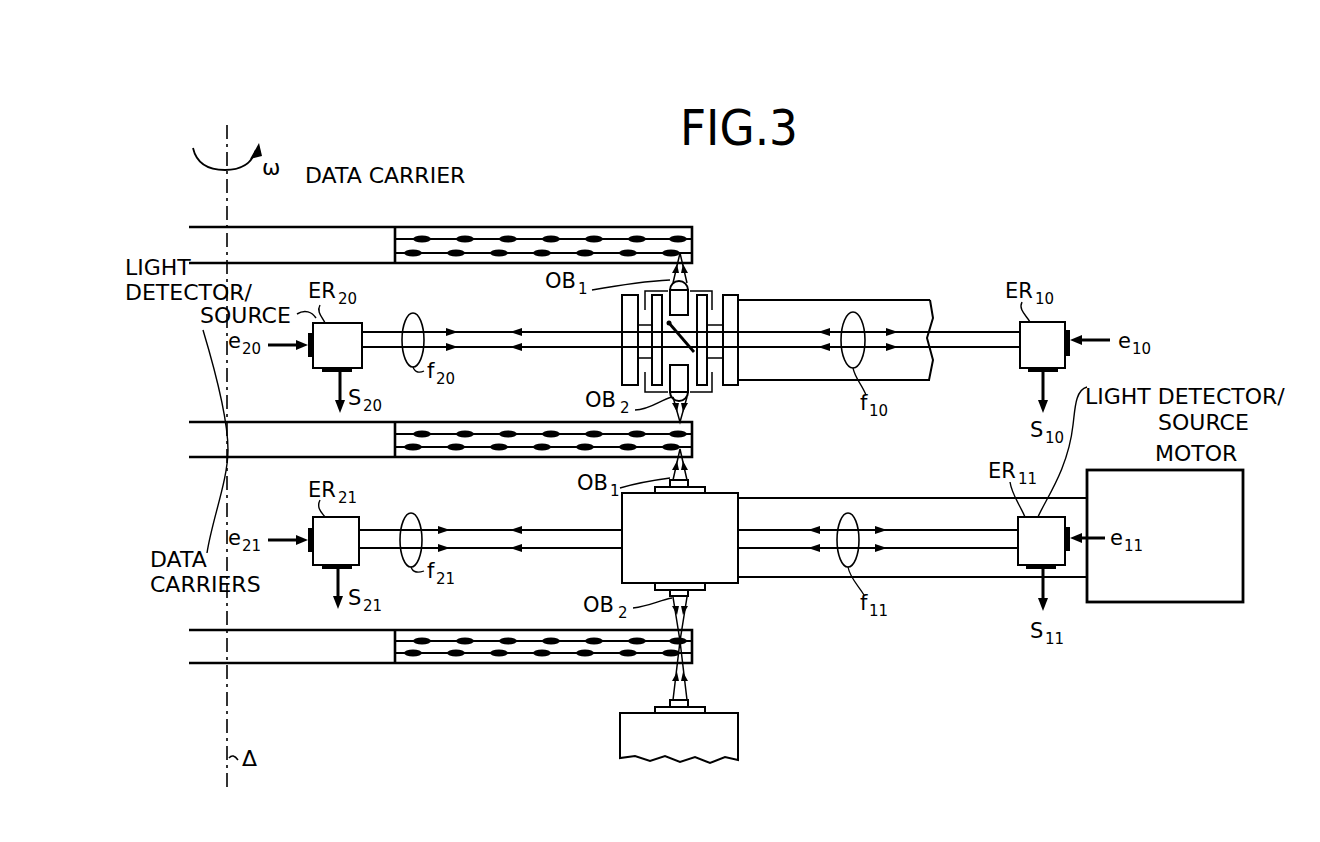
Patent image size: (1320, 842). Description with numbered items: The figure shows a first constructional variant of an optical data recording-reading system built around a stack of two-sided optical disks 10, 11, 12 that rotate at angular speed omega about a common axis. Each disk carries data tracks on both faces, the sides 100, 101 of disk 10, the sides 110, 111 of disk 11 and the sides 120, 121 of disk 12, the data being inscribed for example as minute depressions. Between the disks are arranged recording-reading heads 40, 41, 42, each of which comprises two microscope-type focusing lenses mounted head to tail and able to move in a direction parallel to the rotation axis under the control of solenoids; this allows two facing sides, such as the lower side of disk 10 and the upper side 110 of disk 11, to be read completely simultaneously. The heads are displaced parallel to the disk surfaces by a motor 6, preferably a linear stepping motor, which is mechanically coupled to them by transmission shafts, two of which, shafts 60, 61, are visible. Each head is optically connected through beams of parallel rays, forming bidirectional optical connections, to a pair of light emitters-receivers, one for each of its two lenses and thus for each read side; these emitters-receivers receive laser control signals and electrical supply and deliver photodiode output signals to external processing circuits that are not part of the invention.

The optical disk 10 is at (301, 227).
The side of disk 100 is at (436, 239).
The side of disk 101 is at (436, 263).
The optical disk 11 is at (313, 506).
The upper side of disk 110 is at (541, 434).
The side of disk 111 is at (545, 457).
The optical disk 12 is at (245, 592).
The side of disk 120 is at (524, 641).
The side of disk 121 is at (522, 663).
The recording-reading head 40 is at (739, 302).
The recording-reading head 41 is at (737, 493).
The recording-reading head 42 is at (737, 713).
The transmission shaft 60 is at (855, 305).
The transmission shaft 61 is at (855, 500).
The motor 6 is at (1150, 470).